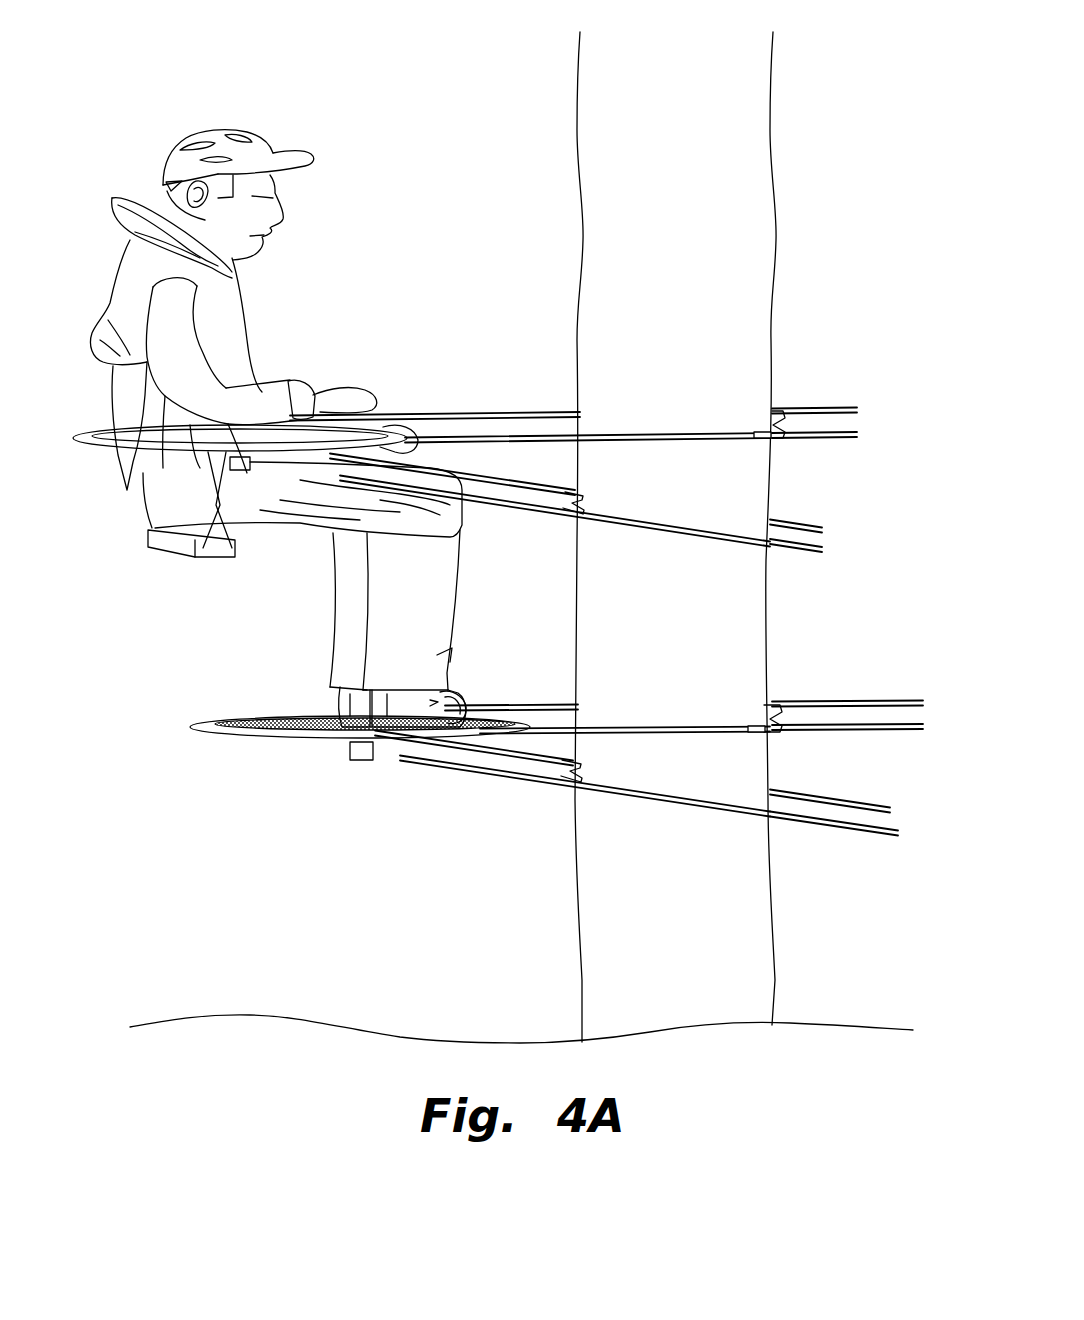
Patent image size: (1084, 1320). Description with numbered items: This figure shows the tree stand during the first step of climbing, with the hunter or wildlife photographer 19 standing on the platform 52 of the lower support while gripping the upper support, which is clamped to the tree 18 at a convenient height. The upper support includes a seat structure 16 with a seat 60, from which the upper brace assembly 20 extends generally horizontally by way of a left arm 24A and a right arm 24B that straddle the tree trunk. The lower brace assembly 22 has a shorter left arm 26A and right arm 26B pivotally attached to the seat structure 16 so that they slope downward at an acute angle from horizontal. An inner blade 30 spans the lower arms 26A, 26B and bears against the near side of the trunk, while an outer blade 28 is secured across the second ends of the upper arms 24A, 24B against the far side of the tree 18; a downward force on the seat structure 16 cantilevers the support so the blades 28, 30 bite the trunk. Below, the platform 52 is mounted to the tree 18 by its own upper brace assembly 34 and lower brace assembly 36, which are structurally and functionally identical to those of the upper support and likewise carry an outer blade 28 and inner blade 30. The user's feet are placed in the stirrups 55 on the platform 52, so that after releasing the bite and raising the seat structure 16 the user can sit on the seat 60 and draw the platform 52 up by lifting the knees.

The seat structure 16 is at (107, 480).
The tree 18 is at (677, 237).
The hunter or wildlife photographer 19 is at (142, 300).
The upper brace assembly 20 is at (823, 372).
The lower brace assembly 22 is at (843, 518).
The left arm 24A is at (415, 410).
The right arm 24B is at (513, 432).
The left arm 26A is at (482, 502).
The right arm 26B is at (541, 520).
The outer blade 28 is at (777, 424).
The inner blade 30 is at (584, 502).
The upper brace assembly 34 is at (866, 660).
The lower brace assembly 36 is at (855, 865).
The platform 52 is at (225, 740).
The stirrup 55 is at (460, 695).
The seat 60 is at (185, 560).